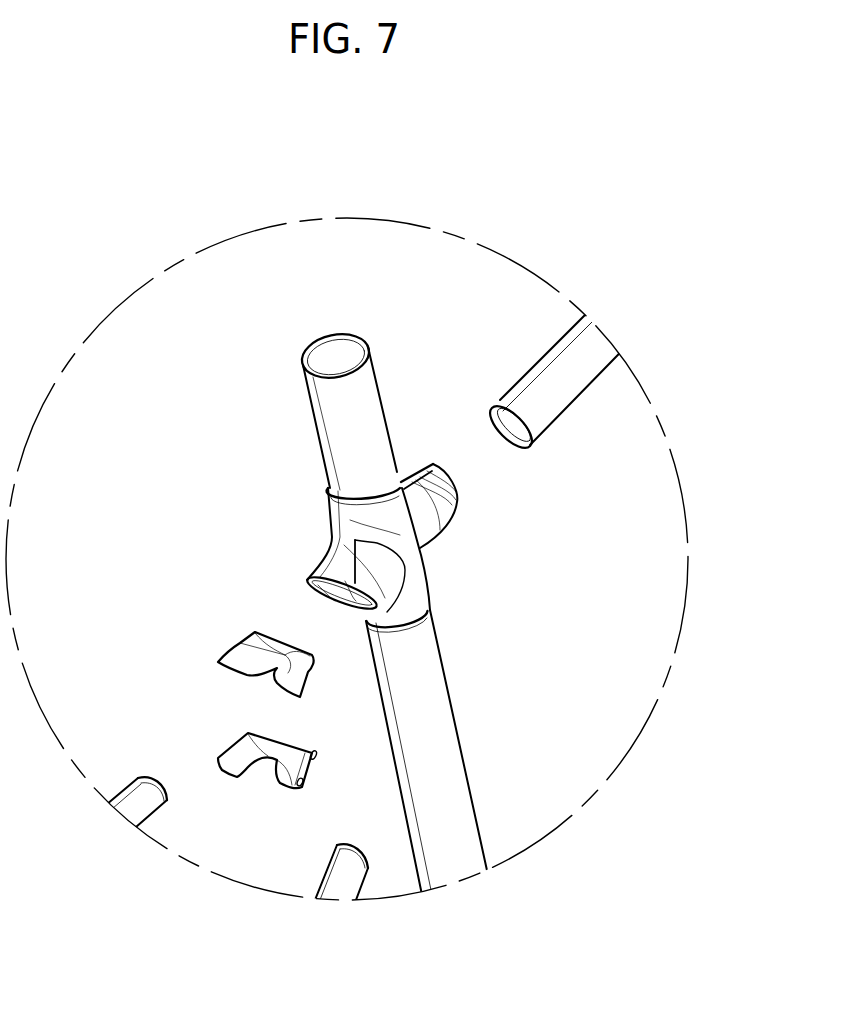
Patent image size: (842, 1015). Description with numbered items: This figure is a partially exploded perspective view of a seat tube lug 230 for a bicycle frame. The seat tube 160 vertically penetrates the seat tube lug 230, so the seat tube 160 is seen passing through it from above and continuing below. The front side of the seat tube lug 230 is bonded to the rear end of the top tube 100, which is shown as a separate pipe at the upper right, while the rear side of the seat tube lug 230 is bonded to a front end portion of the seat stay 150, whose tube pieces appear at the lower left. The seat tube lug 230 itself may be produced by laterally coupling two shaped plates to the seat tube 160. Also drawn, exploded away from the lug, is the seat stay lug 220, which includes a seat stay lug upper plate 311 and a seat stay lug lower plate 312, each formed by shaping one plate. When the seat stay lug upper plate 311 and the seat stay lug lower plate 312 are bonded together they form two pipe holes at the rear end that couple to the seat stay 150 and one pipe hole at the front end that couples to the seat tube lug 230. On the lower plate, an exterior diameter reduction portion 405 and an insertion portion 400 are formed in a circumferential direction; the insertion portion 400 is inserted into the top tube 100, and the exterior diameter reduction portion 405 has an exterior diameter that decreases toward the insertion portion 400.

The top tube 100 is at (522, 372).
The seat stay 150 is at (325, 872).
The seat tube 160 is at (441, 694).
The seat stay lug 220 is at (197, 710).
The seat tube lug 230 is at (432, 553).
The seat stay lug upper plate 311 is at (218, 661).
The seat stay lug lower plate 312 is at (233, 748).
The insertion portion 400 is at (300, 792).
The exterior diameter reduction portion 405 is at (306, 786).